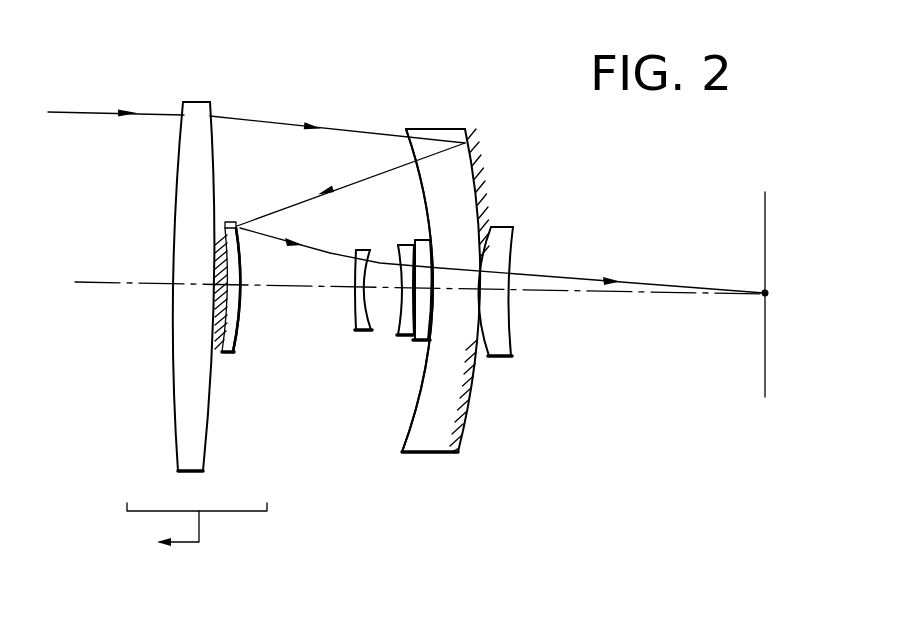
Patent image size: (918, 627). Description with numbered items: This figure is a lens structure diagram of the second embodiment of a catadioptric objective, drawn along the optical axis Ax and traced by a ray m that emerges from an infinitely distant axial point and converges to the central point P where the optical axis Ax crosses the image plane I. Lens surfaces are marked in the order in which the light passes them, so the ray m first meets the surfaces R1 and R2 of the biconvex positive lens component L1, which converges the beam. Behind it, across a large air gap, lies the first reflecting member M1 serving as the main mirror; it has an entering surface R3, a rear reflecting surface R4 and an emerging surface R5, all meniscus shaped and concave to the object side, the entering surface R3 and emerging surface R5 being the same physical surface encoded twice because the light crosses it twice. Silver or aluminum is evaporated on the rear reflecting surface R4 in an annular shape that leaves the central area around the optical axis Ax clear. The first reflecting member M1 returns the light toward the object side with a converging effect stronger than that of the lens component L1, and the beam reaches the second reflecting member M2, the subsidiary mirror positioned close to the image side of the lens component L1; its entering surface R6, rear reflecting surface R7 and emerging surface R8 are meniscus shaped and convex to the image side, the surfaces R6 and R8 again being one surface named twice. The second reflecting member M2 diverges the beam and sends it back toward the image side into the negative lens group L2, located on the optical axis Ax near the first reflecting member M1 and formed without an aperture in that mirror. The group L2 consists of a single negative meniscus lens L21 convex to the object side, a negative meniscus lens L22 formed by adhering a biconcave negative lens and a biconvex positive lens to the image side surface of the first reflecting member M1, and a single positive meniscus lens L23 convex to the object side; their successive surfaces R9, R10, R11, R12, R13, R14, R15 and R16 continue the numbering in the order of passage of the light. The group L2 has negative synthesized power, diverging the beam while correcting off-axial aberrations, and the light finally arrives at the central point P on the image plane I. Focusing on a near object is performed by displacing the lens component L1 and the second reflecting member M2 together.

The ray m is at (87, 112).
The optical axis Ax is at (113, 282).
The biconvex positive lens component L1 is at (197, 294).
The lens surface R1 is at (176, 440).
The lens surface R2 is at (207, 446).
The first reflecting member M1 is at (445, 260).
The entering surface R3 is at (424, 194).
The rear reflecting surface R4 is at (473, 172).
The emerging surface R5 is at (393, 290).
The second reflecting member M2 is at (277, 287).
The entering surface R6 is at (242, 322).
The rear reflecting surface R7 is at (225, 353).
The emerging surface R8 is at (232, 222).
The negative lens group L2 is at (437, 421).
The negative meniscus lens L21 is at (324, 411).
The negative meniscus lens L22 is at (413, 406).
The positive meniscus lens L23 is at (541, 400).
The first surface of lens L21 R9 is at (356, 331).
The second surface of lens L21 R10 is at (370, 331).
The first surface of lens L22 R11 is at (398, 336).
The second surface of lens L22 R12 is at (413, 336).
The third surface of lens L22 R13 is at (415, 342).
The fourth surface of lens L22 R14 is at (430, 342).
The first surface of lens L23 R15 is at (488, 358).
The second surface of lens L23 R16 is at (533, 400).
The image plane I is at (765, 213).
The central point P is at (765, 291).